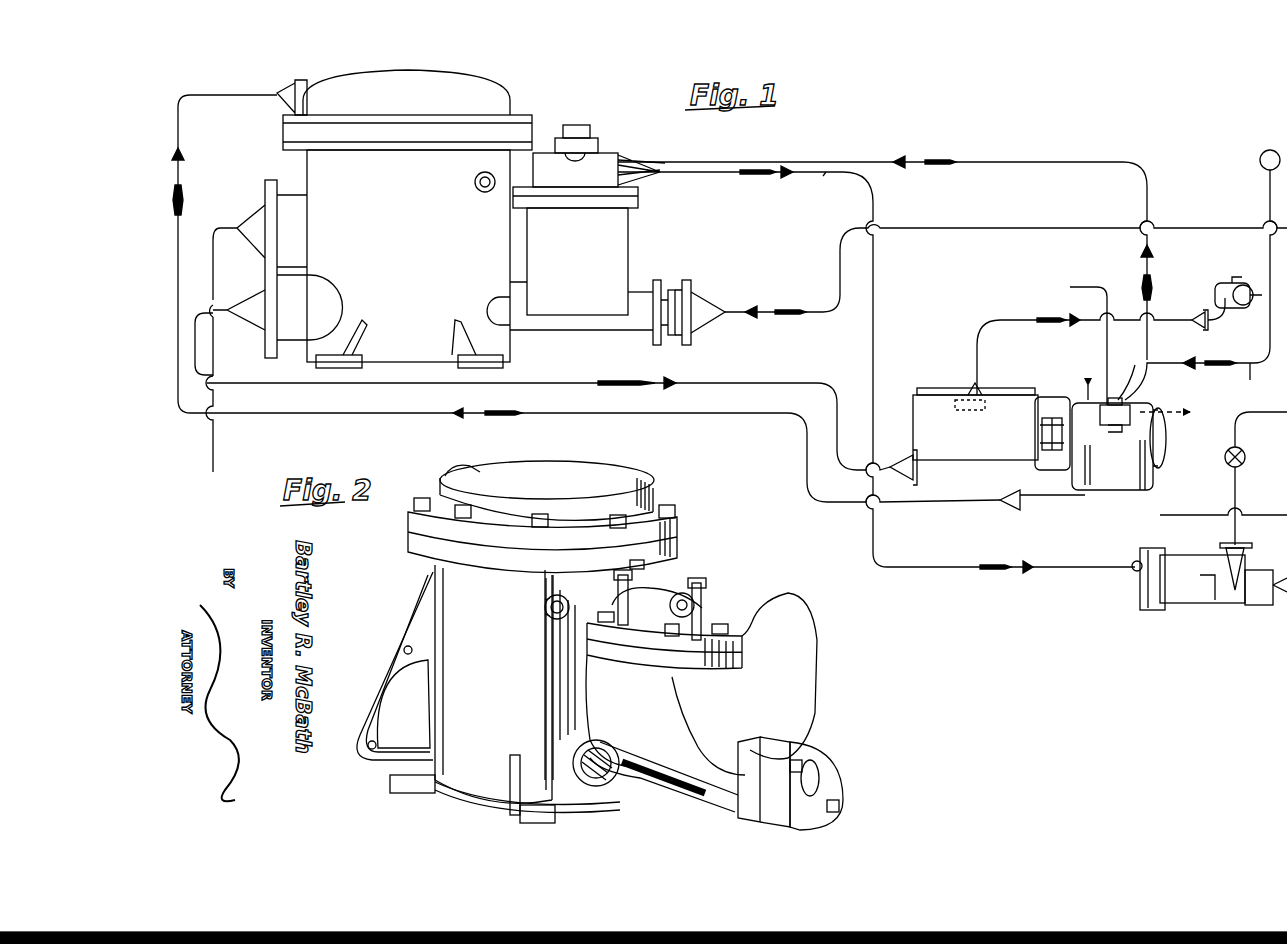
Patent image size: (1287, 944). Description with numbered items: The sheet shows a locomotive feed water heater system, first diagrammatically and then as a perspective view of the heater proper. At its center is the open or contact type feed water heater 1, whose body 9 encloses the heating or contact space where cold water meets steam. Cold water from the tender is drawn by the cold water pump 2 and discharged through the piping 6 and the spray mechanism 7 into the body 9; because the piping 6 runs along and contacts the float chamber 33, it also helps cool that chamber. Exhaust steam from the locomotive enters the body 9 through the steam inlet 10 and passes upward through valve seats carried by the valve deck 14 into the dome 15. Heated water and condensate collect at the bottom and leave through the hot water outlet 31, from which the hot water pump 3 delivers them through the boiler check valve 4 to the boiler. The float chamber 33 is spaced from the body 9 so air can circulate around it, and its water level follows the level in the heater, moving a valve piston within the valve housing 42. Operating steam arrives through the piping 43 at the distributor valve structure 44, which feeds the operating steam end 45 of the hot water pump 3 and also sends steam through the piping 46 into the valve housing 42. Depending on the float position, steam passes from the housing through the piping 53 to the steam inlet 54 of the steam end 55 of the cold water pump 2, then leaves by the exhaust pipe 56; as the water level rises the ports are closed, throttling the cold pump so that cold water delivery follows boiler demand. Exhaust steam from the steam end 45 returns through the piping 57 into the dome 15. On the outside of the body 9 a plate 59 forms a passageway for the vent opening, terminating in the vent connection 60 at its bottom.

In FIG. 1, the feed water heater 1 is at (318, 180).
In FIG. 2, the feed water heater 1 is at (465, 632).
In FIG. 1, the cold water pump 2 is at (1187, 599).
In FIG. 1, the hot water pump 3 is at (937, 393).
In FIG. 1, the boiler check valve 4 is at (1215, 296).
In FIG. 1, the piping 6 is at (611, 332).
In FIG. 2, the piping 6 is at (822, 790).
In FIG. 1, the spray mechanism 7 is at (1094, 359).
In FIG. 2, the body 9 is at (480, 777).
In FIG. 1, the steam inlet 10 is at (290, 220).
In FIG. 1, the valve deck 14 is at (527, 130).
In FIG. 2, the valve deck 14 is at (678, 545).
In FIG. 1, the dome 15 is at (480, 97).
In FIG. 2, the dome 15 is at (598, 487).
In FIG. 1, the hot water outlet 31 is at (540, 383).
In FIG. 2, the hot water outlet 31 is at (400, 755).
In FIG. 1, the float chamber 33 is at (622, 250).
In FIG. 2, the float chamber 33 is at (795, 692).
In FIG. 1, the valve housing 42 is at (600, 158).
In FIG. 2, the valve housing 42 is at (690, 590).
In FIG. 1, the piping 43 is at (1199, 277).
In FIG. 1, the distributor valve structure 44 is at (1112, 432).
In FIG. 1, the operating steam end 45 is at (1150, 455).
In FIG. 1, the piping 46 is at (698, 162).
In FIG. 2, the piping 46 is at (700, 610).
In FIG. 1, the piping 53 is at (824, 174).
In FIG. 2, the piping 53 is at (668, 636).
In FIG. 1, the steam inlet 54 is at (1130, 572).
In FIG. 1, the steam end 55 is at (1155, 585).
In FIG. 1, the exhaust pipe 56 is at (1200, 515).
In FIG. 1, the piping 57 is at (297, 82).
In FIG. 2, the piping 57 is at (452, 468).
In FIG. 2, the plate 59 is at (565, 690).
In FIG. 2, the vent connection 60 is at (600, 792).